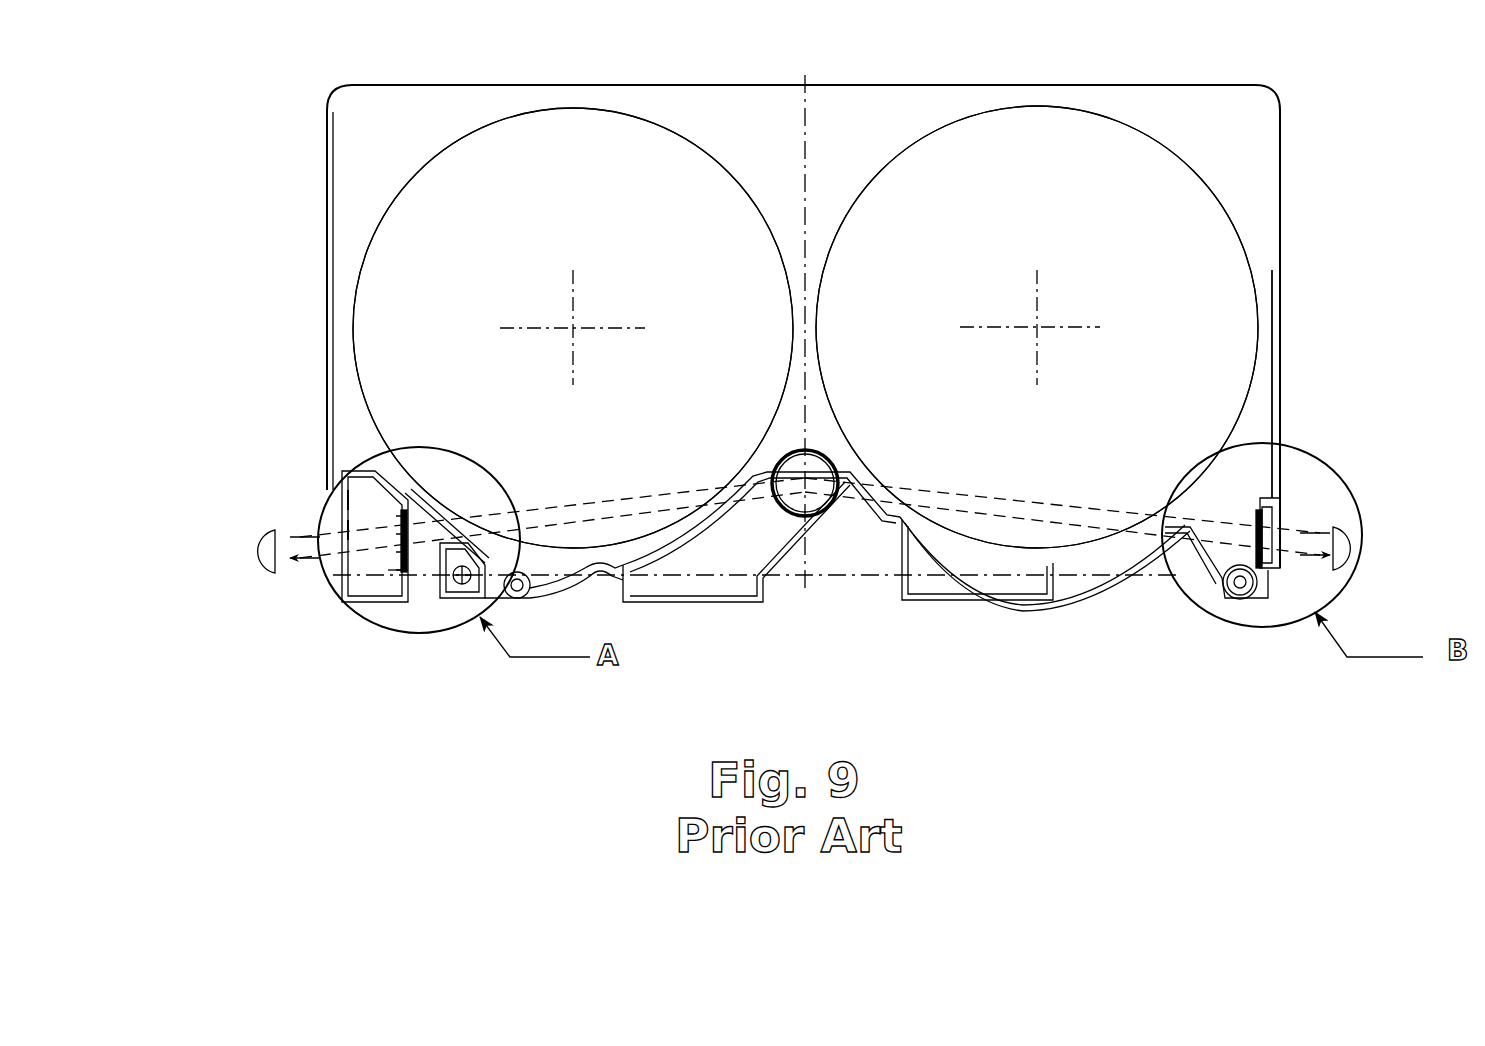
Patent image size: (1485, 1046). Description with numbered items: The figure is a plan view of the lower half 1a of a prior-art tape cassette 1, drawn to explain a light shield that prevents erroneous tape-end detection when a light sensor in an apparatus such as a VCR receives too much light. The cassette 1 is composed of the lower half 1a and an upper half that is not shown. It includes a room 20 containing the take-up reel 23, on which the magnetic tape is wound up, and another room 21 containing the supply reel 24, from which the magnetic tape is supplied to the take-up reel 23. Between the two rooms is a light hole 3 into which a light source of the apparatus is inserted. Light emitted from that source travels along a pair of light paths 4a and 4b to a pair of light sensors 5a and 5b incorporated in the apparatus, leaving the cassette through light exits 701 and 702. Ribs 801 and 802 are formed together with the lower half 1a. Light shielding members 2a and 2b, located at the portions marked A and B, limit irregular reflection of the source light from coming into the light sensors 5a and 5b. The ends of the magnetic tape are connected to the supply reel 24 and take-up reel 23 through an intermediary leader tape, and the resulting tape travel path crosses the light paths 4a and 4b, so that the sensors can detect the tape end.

The tape cassette 1 is at (322, 390).
The lower half 1a is at (327, 138).
The room 20 is at (667, 100).
The room 21 is at (1165, 103).
The take-up reel 23 is at (465, 208).
The supply reel 24 is at (963, 210).
The light shielding member 2a is at (410, 528).
The light shielding member 2b is at (1297, 512).
The light hole 3 is at (797, 485).
The light path 4a is at (653, 502).
The light path 4b is at (985, 480).
The light sensor 5a is at (293, 513).
The light sensor 5b is at (1378, 505).
The light exit 701 is at (350, 540).
The light exit 702 is at (1275, 545).
The rib 801 is at (392, 600).
The rib 802 is at (1277, 316).